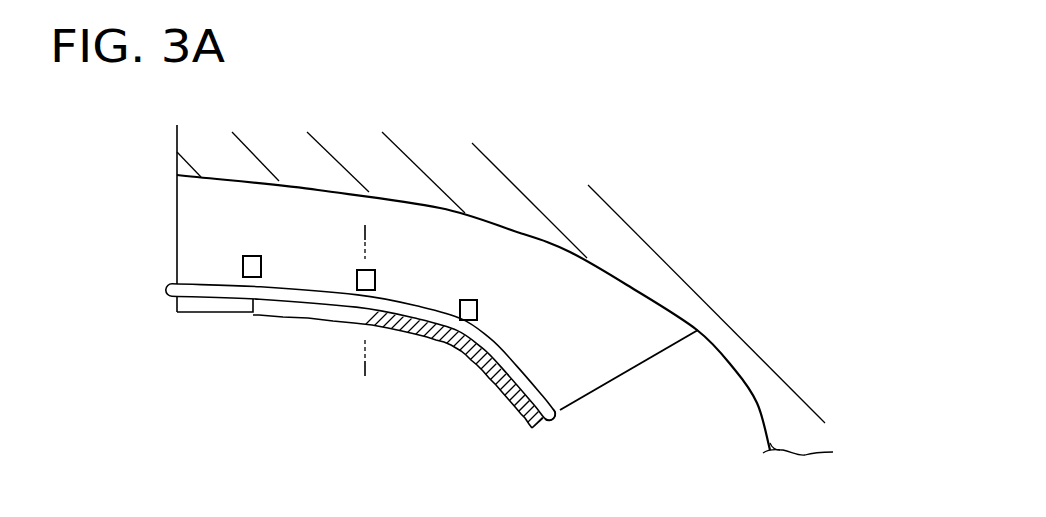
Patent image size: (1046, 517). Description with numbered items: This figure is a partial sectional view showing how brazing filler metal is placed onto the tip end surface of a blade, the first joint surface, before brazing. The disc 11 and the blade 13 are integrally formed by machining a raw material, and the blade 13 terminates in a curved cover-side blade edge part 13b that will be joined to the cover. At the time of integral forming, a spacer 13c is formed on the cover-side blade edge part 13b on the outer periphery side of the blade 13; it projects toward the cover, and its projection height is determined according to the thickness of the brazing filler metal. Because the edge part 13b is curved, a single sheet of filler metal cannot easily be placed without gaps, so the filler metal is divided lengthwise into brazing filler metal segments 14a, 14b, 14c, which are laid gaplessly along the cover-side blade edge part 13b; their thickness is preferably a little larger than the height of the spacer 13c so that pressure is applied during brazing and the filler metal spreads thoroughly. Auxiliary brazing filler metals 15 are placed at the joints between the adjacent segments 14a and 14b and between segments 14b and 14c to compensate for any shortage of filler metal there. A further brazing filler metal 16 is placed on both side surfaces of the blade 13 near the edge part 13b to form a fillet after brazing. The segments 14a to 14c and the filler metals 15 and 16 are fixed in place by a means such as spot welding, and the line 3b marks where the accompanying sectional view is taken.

The disc 11 is at (753, 413).
The blade 13 is at (623, 377).
The cover-side blade edge part 13b is at (485, 372).
The spacer 13c is at (215, 312).
The brazing filler metal segment 14a is at (317, 315).
The brazing filler metal segment 14b is at (408, 340).
The brazing filler metal segment 14c is at (515, 403).
The auxiliary brazing filler metal 15 is at (250, 255).
The brazing filler metal 16 is at (518, 362).
The line 3b- 3b is at (358, 232).